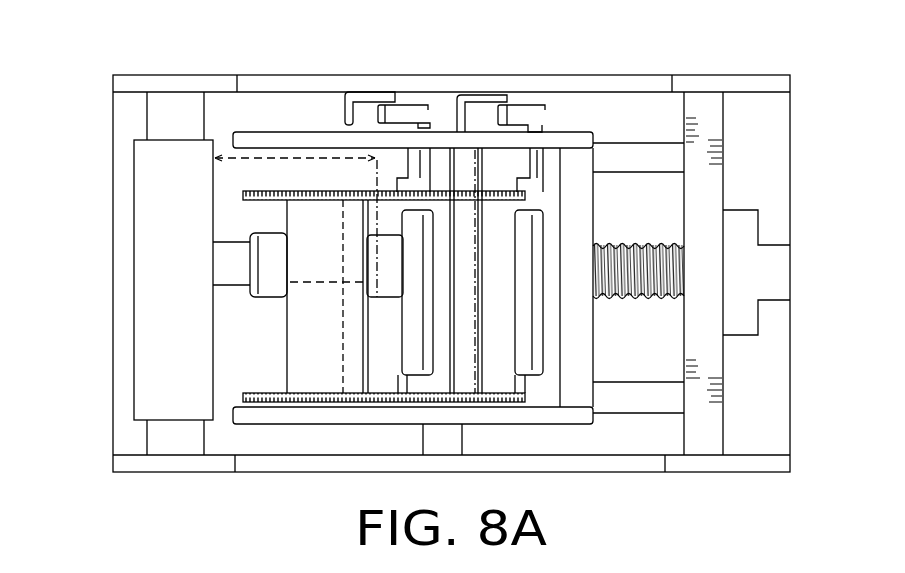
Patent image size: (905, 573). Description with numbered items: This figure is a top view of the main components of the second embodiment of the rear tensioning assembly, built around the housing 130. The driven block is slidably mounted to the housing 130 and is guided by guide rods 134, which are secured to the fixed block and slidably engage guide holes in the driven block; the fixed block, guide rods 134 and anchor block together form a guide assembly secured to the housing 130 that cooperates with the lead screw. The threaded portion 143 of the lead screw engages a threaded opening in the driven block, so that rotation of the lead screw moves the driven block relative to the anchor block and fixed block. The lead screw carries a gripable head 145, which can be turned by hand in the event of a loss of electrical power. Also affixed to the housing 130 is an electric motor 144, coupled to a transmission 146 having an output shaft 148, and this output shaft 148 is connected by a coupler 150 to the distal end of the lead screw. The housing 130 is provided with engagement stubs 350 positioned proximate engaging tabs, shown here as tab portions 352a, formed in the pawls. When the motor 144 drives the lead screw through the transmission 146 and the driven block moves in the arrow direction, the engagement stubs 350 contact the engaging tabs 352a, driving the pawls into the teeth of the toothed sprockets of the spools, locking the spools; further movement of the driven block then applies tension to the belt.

The housing 130 is at (273, 475).
The guide rods 134 is at (655, 153).
The threaded portion 143 is at (637, 303).
The electric motor 144 is at (292, 157).
The gripable head 145 is at (770, 272).
The transmission 146 is at (163, 251).
The output shaft 148 is at (233, 273).
The coupler 150 is at (262, 297).
The engagement stubs 350 is at (388, 92).
The clip channel portion 352a is at (432, 113).